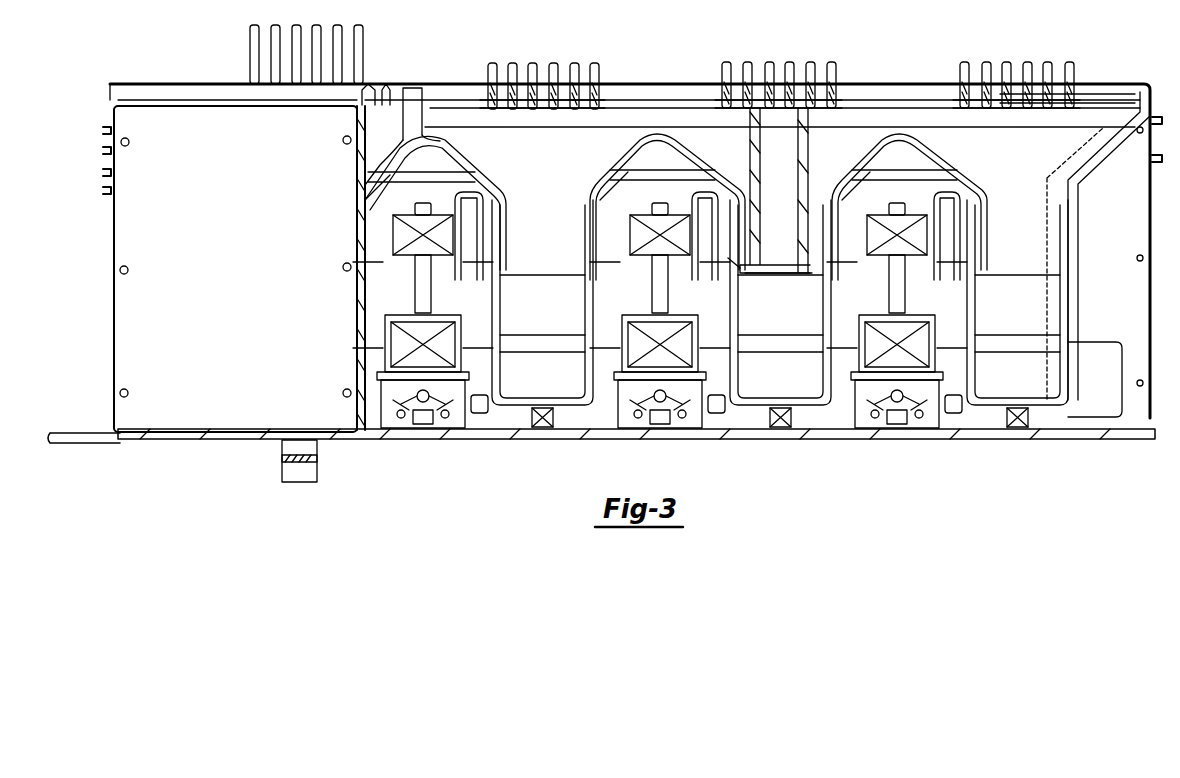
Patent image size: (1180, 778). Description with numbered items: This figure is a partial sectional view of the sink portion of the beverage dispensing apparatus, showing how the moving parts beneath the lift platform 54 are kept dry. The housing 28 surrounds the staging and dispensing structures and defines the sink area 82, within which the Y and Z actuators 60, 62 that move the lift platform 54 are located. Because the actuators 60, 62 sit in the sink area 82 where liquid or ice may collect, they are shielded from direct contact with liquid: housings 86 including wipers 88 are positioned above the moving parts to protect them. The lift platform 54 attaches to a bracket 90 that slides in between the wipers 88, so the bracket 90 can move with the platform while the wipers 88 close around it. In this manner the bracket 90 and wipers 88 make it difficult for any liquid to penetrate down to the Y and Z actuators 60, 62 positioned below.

The housing 28 is at (185, 415).
The lift platform 54 is at (810, 125).
The Y actuator 60 is at (694, 420).
The Z actuator 62 is at (657, 286).
The sink area 82 is at (520, 148).
The housing including wipers 86 is at (308, 473).
The wiper 88 is at (700, 142).
The bracket 90 is at (800, 279).